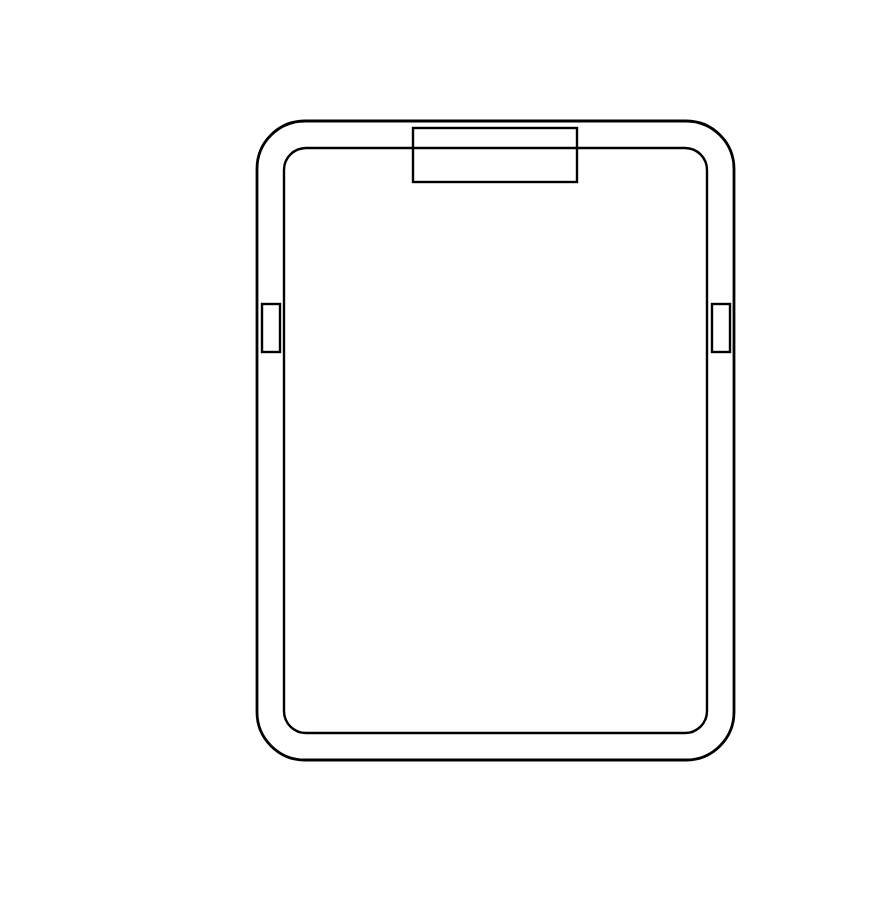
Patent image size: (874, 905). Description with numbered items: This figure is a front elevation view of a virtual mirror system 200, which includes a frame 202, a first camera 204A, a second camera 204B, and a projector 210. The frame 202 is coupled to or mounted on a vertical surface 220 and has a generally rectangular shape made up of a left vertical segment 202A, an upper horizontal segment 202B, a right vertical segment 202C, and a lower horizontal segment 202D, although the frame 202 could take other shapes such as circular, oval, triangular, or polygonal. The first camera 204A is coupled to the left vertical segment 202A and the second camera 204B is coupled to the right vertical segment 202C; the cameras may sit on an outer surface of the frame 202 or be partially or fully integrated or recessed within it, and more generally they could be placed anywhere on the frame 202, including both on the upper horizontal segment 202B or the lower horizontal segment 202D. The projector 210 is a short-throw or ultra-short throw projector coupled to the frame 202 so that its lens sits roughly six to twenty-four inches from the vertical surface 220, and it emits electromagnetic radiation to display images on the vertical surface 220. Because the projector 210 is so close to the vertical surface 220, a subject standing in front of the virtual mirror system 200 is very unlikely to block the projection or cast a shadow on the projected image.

The virtual mirror system 200 is at (190, 80).
The frame 202 is at (197, 270).
The left vertical segment 202A is at (266, 415).
The upper horizontal segment 202B is at (365, 134).
The right vertical segment 202C is at (726, 417).
The lower horizontal segment 202D is at (365, 745).
The first camera 204A is at (268, 311).
The second camera 204B is at (724, 311).
The projector 210 is at (454, 142).
The vertical surface 220 is at (234, 700).